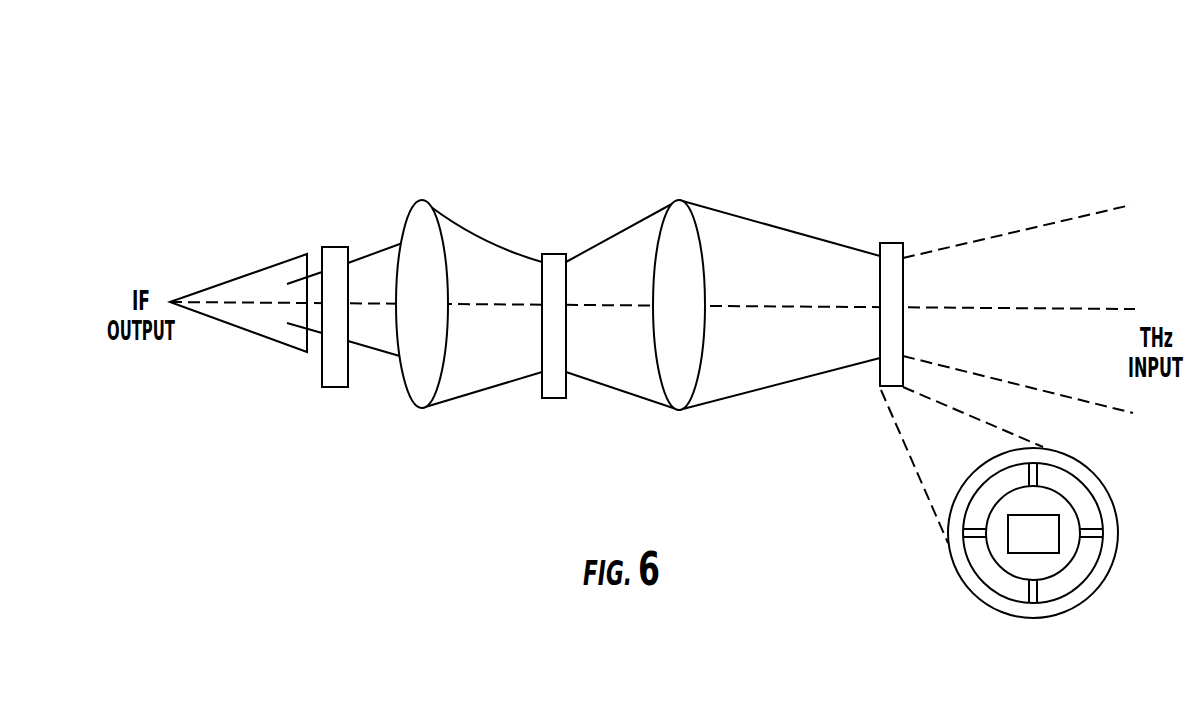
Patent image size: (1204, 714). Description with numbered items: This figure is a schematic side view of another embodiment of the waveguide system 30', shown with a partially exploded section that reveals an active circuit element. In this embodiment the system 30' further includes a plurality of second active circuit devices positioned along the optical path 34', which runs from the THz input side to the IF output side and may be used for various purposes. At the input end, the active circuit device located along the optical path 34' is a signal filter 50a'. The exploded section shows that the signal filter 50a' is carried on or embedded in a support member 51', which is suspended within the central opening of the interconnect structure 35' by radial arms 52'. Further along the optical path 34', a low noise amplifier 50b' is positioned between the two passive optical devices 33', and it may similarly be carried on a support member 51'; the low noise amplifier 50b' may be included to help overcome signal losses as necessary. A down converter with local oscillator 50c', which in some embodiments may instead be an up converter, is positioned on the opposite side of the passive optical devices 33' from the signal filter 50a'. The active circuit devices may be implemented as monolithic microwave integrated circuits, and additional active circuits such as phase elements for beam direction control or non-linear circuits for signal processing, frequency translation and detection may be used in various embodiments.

The system 30' is at (666, 181).
The passive optical devices 33' is at (535, 351).
The optical path 34' is at (1043, 309).
The interconnect structure 35' is at (1067, 533).
The signal filter 50a' is at (969, 408).
The low noise amplifier 50b' is at (568, 279).
The down converter/local oscillator 50c' is at (348, 265).
The support member 51' is at (1056, 574).
The radial arms 52' is at (1070, 533).